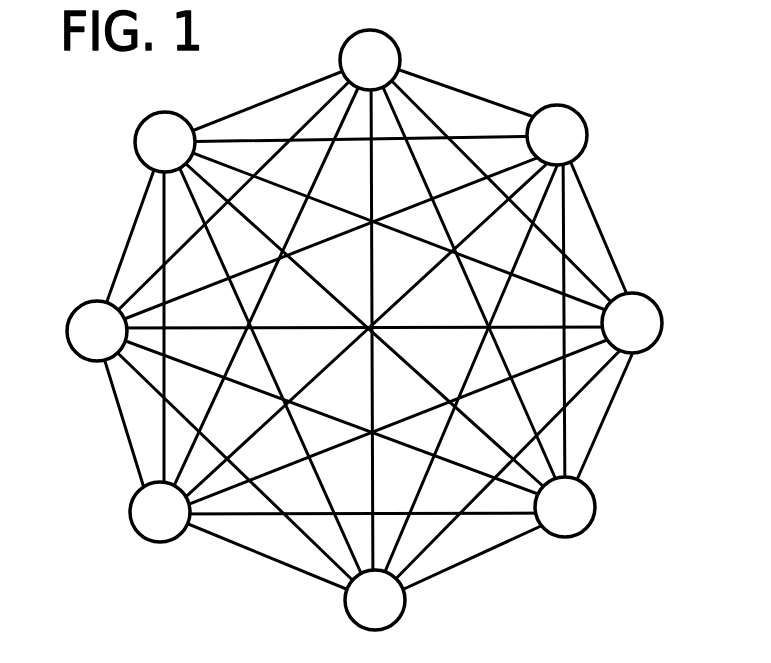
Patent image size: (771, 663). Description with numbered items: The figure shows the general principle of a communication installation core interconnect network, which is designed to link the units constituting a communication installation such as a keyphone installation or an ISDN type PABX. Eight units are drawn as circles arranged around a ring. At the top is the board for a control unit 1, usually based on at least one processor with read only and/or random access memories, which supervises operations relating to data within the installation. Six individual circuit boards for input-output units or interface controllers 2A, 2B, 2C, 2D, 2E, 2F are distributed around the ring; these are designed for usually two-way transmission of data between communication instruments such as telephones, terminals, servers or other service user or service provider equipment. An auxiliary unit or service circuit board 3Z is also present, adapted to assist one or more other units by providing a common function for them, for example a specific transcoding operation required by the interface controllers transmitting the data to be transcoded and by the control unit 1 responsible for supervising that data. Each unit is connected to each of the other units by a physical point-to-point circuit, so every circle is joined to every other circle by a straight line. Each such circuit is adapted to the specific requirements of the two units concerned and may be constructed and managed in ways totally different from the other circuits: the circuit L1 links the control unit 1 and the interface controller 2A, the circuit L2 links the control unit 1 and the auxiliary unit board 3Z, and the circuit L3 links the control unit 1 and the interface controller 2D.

The control unit 1 is at (390, 52).
The interface controller 2A is at (150, 141).
The interface controller 2B is at (72, 330).
The interface controller 2C is at (136, 513).
The interface controller 2D is at (396, 613).
The interface controller 2E is at (589, 499).
The interface controller 2F is at (581, 137).
The auxiliary unit board 3Z is at (656, 323).
The point-to-point circuit L1 is at (272, 98).
The point-to-point circuit L2 is at (467, 90).
The point-to-point circuit L3 is at (374, 490).